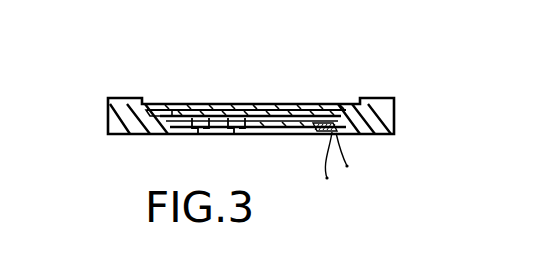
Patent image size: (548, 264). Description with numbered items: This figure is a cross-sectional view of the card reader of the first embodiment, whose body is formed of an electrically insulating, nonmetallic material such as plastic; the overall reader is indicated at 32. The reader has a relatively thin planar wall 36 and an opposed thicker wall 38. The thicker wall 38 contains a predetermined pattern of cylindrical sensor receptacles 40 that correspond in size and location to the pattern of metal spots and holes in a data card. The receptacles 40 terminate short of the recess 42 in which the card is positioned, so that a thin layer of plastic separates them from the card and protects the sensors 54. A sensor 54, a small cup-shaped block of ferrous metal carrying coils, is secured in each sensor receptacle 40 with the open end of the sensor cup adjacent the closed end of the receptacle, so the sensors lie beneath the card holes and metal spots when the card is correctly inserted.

The semiconductor package 32 is at (404, 104).
The thin planar wall 36 is at (252, 103).
The thicker wall 38 is at (130, 134).
The sensor receptacles 40 is at (238, 136).
The recess 42 is at (167, 110).
The sensors 54 is at (314, 132).